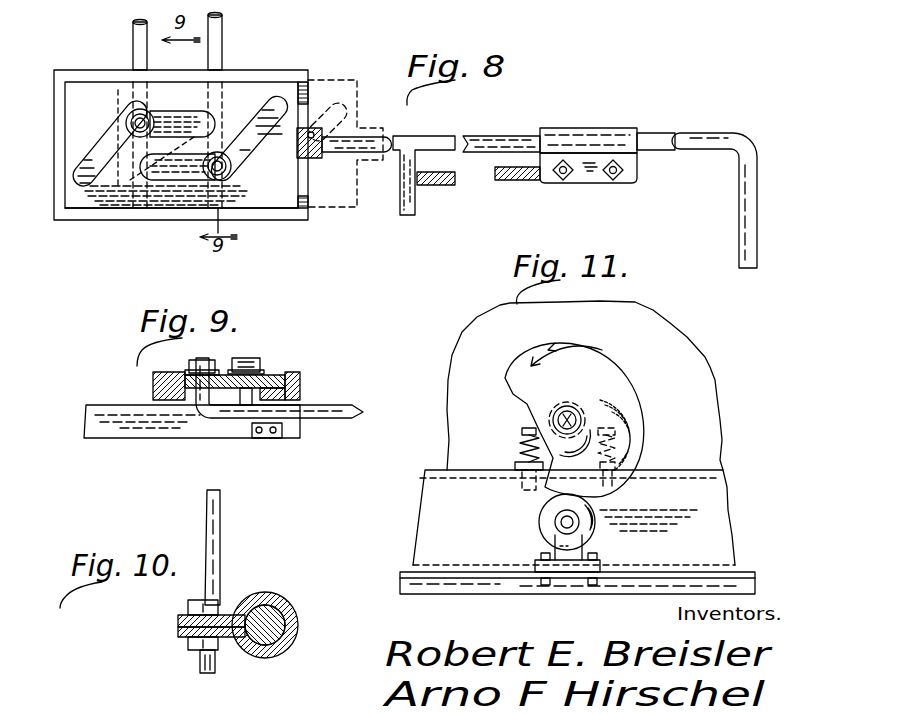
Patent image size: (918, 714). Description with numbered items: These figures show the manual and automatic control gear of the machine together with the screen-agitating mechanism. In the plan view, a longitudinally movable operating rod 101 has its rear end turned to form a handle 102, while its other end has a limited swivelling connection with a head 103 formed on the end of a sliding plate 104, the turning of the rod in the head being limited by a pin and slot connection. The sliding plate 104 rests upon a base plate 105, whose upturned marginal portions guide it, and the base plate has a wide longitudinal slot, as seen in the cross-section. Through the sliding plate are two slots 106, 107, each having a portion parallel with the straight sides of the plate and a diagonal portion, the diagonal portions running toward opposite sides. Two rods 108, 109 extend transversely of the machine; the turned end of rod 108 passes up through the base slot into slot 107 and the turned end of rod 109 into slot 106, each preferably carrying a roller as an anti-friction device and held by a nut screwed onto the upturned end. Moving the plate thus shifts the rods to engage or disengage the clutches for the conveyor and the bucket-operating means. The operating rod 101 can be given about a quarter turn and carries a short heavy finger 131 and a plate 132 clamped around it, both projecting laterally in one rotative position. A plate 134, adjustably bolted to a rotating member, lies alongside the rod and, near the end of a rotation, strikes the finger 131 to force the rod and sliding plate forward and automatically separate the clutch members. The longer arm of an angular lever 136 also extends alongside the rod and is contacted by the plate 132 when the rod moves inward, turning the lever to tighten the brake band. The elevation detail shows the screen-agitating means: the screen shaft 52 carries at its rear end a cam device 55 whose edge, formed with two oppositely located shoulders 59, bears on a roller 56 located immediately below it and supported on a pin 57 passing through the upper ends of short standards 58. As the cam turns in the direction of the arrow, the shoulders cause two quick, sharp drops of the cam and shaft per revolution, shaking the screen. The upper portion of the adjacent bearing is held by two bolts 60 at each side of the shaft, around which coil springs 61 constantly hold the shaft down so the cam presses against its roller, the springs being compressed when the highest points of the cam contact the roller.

In FIG. 8, the operating rod 101 is at (468, 125).
In FIG. 10, the operating rod 101 is at (245, 612).
In FIG. 8, the handle 102 is at (739, 192).
In FIG. 8, the head 103 is at (298, 147).
In FIG. 8, the sliding plate 104 is at (65, 150).
In FIG. 9, the sliding plate 104 is at (285, 372).
In FIG. 8, the base plate 105 is at (55, 196).
In FIG. 9, the base plate 105 is at (152, 393).
In FIG. 8, the slot 106 is at (163, 138).
In FIG. 8, the slot 107 is at (178, 181).
In FIG. 9, the slot 107 is at (153, 380).
In FIG. 8, the rod 108 is at (222, 22).
In FIG. 9, the rod 108 is at (363, 412).
In FIG. 8, the rod 109 is at (133, 37).
In FIG. 8, the finger 131 is at (405, 215).
In FIG. 8, the plate 132 is at (586, 183).
In FIG. 10, the plate 132 is at (275, 598).
In FIG. 8, the plate 134 is at (425, 173).
In FIG. 8, the angular lever 136 is at (515, 181).
In FIG. 10, the angular lever 136 is at (220, 532).
In FIG. 11, the shaft 52 is at (568, 411).
In FIG. 11, the cam device 55 is at (610, 373).
In FIG. 11, the roller 56 is at (540, 514).
In FIG. 11, the pin 57 is at (560, 525).
In FIG. 11, the standards 58 is at (560, 541).
In FIG. 11, the shoulders 59 is at (655, 500).
In FIG. 11, the bolts 60 is at (521, 430).
In FIG. 11, the coil springs 61 is at (522, 448).